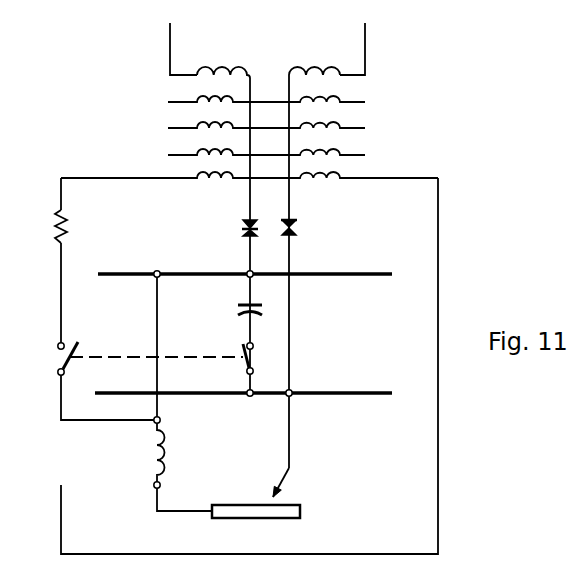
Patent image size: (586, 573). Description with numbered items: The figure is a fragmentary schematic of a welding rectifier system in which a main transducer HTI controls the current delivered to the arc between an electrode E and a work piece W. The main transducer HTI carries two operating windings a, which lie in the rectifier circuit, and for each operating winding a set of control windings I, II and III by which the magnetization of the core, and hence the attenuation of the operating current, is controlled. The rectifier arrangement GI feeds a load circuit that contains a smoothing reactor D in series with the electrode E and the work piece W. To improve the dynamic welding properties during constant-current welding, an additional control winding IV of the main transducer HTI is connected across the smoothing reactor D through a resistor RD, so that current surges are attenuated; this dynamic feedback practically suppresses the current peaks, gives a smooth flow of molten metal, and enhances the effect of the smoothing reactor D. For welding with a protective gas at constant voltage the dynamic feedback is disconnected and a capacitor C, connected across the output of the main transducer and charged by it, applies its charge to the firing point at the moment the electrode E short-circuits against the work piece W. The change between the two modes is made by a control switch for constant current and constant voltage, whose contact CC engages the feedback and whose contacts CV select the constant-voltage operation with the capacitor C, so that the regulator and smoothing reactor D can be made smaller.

The main transducer HTI is at (285, 58).
The operating winding a is at (225, 68).
The control winding I is at (198, 99).
The control winding II is at (201, 125).
The control winding III is at (204, 151).
The control winding IV is at (205, 175).
The rectifier arrangement GI is at (277, 211).
The resistor RD is at (71, 234).
The capacitor C is at (243, 302).
The constant voltage switch contacts CV is at (245, 343).
The constant current switch contact CC is at (57, 343).
The smoothing reactor D is at (163, 452).
The work piece W is at (231, 505).
The electrode E is at (286, 479).